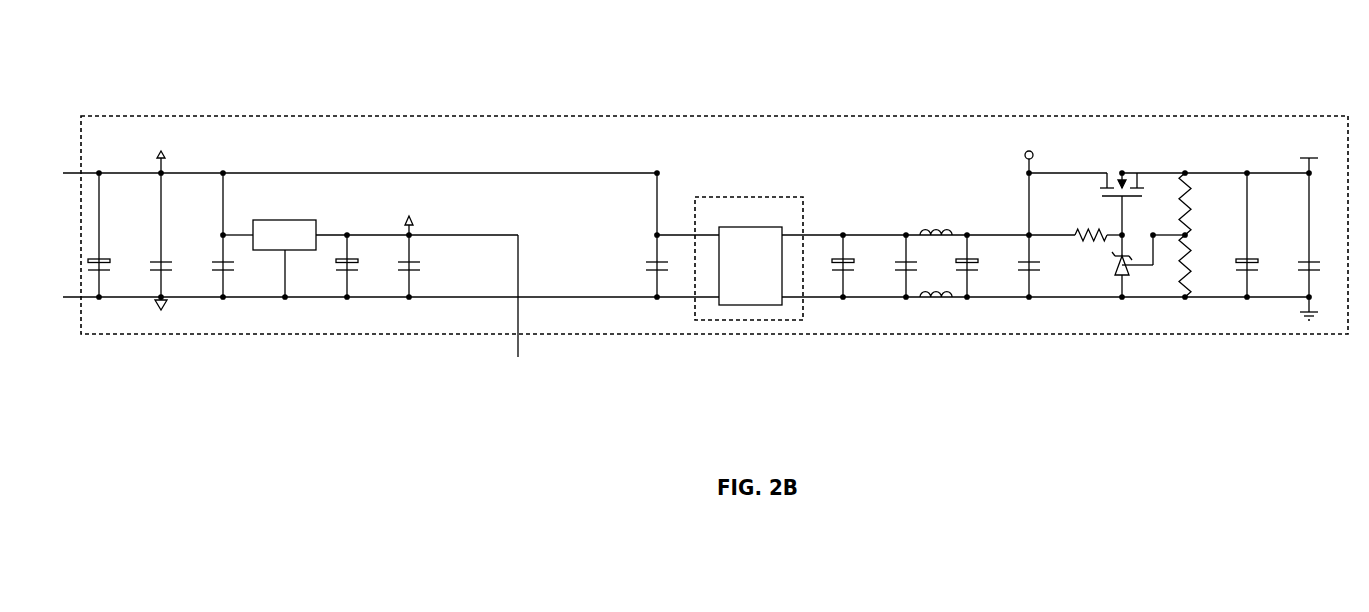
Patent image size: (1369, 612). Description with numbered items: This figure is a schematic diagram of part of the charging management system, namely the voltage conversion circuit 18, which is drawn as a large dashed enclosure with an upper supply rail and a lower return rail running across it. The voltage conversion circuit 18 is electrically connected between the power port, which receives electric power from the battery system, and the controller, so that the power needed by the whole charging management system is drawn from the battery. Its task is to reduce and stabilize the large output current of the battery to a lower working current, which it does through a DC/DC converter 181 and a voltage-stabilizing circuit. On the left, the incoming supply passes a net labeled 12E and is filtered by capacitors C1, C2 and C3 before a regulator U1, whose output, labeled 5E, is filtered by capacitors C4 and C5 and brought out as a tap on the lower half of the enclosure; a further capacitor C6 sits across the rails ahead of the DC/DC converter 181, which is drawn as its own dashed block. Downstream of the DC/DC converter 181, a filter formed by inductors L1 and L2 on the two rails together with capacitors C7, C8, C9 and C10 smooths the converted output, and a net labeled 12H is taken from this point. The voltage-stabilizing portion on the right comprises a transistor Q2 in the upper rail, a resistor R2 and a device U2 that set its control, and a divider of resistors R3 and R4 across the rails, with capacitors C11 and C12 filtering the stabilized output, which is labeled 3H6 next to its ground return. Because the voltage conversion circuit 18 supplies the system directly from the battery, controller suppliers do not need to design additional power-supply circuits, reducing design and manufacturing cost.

The voltage conversion circuit 18 is at (622, 117).
The DC/DC converter 181 is at (740, 197).
The 12V input net 12E is at (161, 153).
The 5V net 5E is at (409, 212).
The 12V high-side net 12H is at (1028, 146).
The 3.6V net 3H6 is at (1312, 148).
The voltage regulator U1 is at (285, 249).
The zener diode U2 is at (1119, 266).
The MOSFET Q2 is at (1121, 192).
The inductor L1 is at (936, 217).
The inductor L2 is at (936, 306).
The resistor R2 is at (1091, 223).
The resistor R3 is at (1196, 204).
The resistor R4 is at (1196, 266).
The capacitor C1 is at (109, 235).
The capacitor C2 is at (171, 235).
The capacitor C3 is at (233, 235).
The capacitor C4 is at (357, 266).
The capacitor C5 is at (419, 261).
The capacitor C6 is at (643, 263).
The capacitor C7 is at (853, 266).
The capacitor C8 is at (916, 266).
The capacitor C9 is at (977, 266).
The capacitor C10 is at (1044, 228).
The capacitor C11 is at (1262, 235).
The capacitor C12 is at (1319, 227).